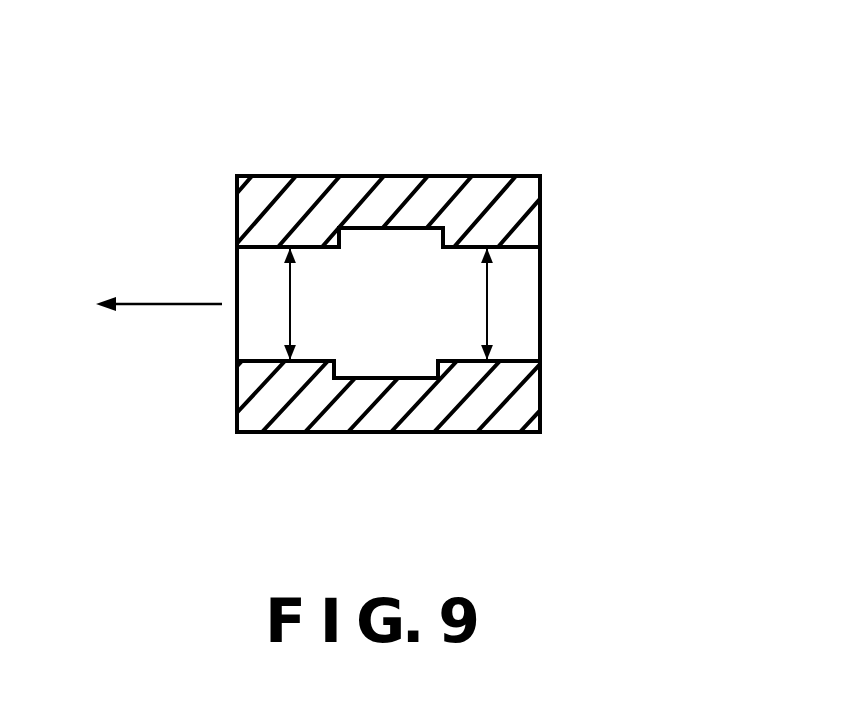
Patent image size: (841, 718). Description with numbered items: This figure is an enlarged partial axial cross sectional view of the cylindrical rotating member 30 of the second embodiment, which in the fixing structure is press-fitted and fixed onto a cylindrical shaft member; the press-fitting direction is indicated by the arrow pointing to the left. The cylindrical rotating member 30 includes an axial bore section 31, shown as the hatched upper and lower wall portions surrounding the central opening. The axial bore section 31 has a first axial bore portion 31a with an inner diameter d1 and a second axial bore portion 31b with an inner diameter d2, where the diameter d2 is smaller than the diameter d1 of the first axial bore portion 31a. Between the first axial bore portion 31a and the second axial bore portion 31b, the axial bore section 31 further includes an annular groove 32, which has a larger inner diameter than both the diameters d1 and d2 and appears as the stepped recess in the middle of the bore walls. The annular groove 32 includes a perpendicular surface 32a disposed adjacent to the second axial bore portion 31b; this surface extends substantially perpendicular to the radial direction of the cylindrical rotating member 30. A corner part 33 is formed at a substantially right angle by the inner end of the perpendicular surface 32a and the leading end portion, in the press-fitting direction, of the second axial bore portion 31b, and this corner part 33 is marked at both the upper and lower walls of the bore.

The cylindrical rotating member 30 is at (426, 264).
The axial bore section 31 is at (426, 282).
The first axial bore portion 31a is at (265, 249).
The second axial bore portion 31b is at (512, 248).
The annular groove 32 is at (381, 429).
The perpendicular surface 32a is at (437, 370).
The corner part 33 is at (434, 243).
The inner diameter of first axial bore portion d1 is at (288, 304).
The inner diameter of second axial bore portion d2 is at (483, 304).